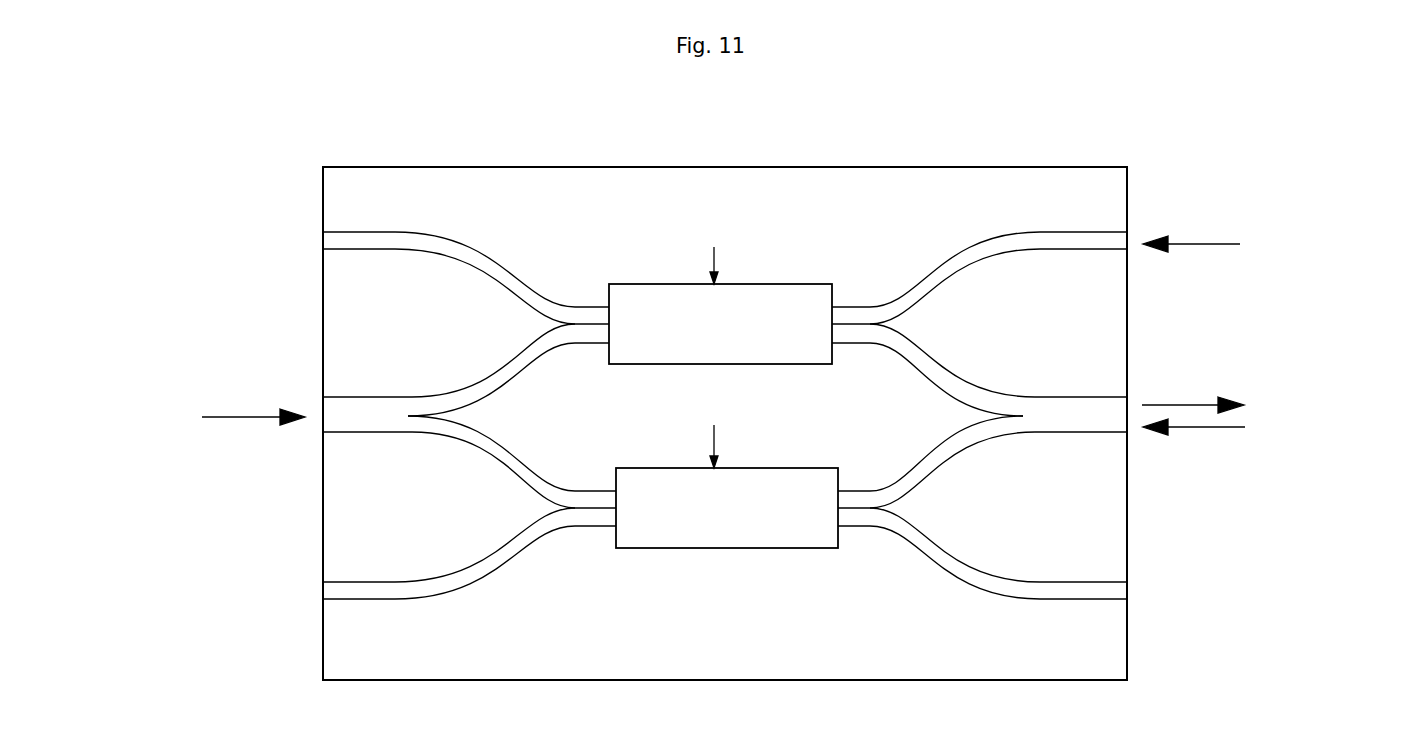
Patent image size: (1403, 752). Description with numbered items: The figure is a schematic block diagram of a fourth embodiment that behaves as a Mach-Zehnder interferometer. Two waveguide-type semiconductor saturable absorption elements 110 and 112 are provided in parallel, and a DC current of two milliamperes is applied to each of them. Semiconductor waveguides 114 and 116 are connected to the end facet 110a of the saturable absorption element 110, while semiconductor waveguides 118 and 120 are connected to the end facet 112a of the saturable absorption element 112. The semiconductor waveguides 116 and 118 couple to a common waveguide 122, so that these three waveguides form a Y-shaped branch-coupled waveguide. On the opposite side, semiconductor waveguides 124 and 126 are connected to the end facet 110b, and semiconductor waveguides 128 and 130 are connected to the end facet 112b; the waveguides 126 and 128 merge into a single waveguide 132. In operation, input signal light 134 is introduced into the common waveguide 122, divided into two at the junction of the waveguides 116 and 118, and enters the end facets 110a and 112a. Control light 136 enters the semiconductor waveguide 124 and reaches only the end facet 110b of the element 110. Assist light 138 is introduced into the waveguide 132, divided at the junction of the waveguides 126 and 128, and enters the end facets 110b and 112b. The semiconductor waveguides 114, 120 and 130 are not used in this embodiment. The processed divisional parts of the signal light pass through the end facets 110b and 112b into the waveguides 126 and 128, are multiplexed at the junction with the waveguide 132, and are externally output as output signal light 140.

The semiconductor saturable absorption element 110 is at (807, 290).
The end facet 110a is at (611, 360).
The end facet 110b is at (829, 360).
The semiconductor saturable absorption element 112 is at (793, 483).
The end facet 112a is at (618, 538).
The end facet 112b is at (832, 538).
The semiconductor waveguide 114 is at (508, 270).
The semiconductor waveguide 116 is at (522, 358).
The semiconductor waveguide 118 is at (510, 458).
The semiconductor waveguide 120 is at (515, 543).
The common waveguide 122 is at (370, 405).
The semiconductor waveguide 124 is at (953, 262).
The semiconductor waveguide 126 is at (952, 378).
The semiconductor waveguide 128 is at (948, 450).
The semiconductor waveguide 130 is at (948, 560).
The single waveguide 132 is at (1077, 410).
The input signal light 134 is at (248, 415).
The control light 136 is at (1203, 242).
The assist light 138 is at (1202, 430).
The output signal light 140 is at (1197, 385).